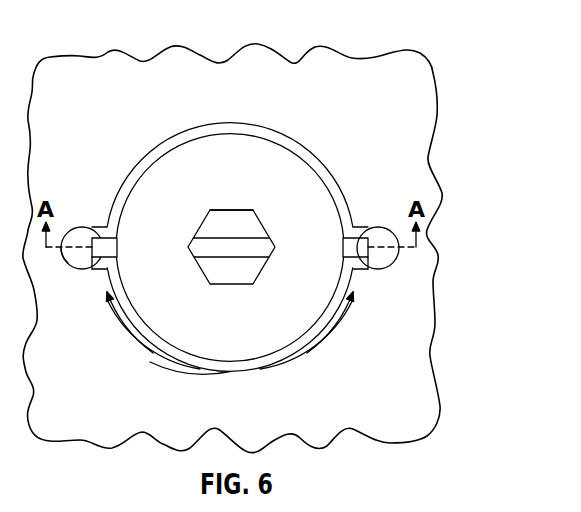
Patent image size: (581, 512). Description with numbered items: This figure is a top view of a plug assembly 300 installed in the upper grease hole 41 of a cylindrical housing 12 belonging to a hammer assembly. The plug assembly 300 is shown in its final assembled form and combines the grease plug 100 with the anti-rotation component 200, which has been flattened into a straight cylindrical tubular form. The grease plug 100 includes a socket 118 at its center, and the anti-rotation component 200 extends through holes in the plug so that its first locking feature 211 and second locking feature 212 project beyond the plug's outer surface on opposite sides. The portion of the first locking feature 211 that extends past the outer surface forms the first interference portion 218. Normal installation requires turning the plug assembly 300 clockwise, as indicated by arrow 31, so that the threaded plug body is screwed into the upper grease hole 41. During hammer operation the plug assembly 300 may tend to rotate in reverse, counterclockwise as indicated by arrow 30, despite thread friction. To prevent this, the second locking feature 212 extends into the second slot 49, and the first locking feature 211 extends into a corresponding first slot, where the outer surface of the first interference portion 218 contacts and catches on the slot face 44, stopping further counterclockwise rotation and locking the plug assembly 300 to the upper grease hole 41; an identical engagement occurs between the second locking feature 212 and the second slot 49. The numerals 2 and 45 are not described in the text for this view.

The cylindrical housing 12 is at (353, 430).
The plug assembly 300 is at (127, 128).
The grease plug 100 is at (132, 186).
The arrow 31 is at (137, 341).
The arrow 30 is at (323, 341).
The upper grease hole 41 is at (163, 354).
The first locking feature 211 is at (99, 238).
The second locking feature 212 is at (368, 261).
The second slot 49 is at (381, 238).
The first interference portion 218 is at (100, 266).
The fastener 2 is at (67, 263).
The anti-rotation component 200 is at (257, 238).
The socket 118 is at (231, 209).
The slot face 44 is at (115, 322).
The rotation direction arrow 45 is at (347, 322).